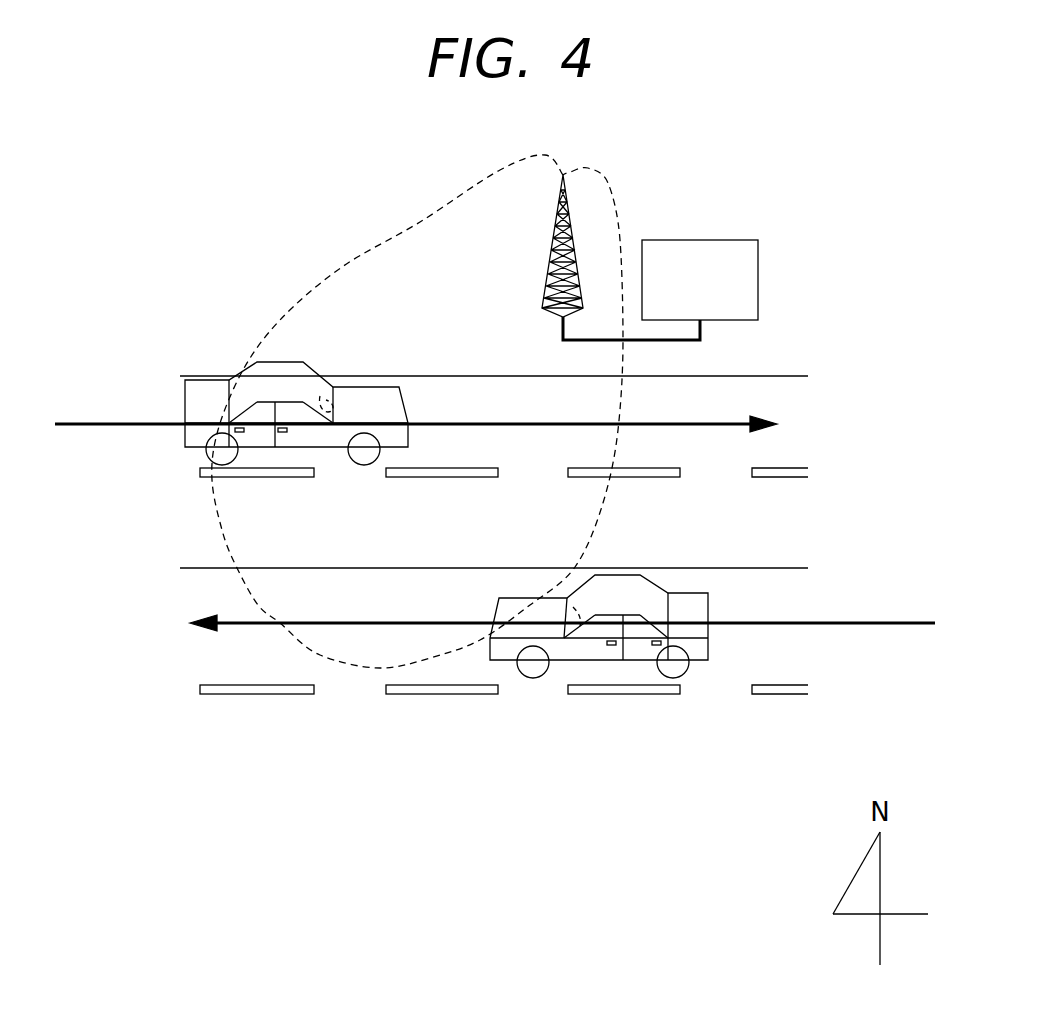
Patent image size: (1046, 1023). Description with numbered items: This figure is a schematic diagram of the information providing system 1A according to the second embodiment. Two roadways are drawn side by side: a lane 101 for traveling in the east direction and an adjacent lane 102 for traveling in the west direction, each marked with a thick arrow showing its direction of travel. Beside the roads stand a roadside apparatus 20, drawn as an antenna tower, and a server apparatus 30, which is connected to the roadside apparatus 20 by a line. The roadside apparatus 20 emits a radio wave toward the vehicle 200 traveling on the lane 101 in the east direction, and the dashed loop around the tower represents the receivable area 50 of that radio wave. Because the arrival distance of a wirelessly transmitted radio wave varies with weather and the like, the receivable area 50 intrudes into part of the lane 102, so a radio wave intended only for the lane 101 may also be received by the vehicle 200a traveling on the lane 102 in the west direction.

The information providing system 1A is at (868, 196).
The roadside apparatus 20 is at (575, 238).
The server apparatus 30 is at (758, 279).
The receivable area 50 is at (342, 267).
The lane in the east direction 101 is at (745, 392).
The lane in the west direction 102 is at (502, 710).
The vehicle 200 is at (215, 380).
The vehicle 200a is at (683, 595).